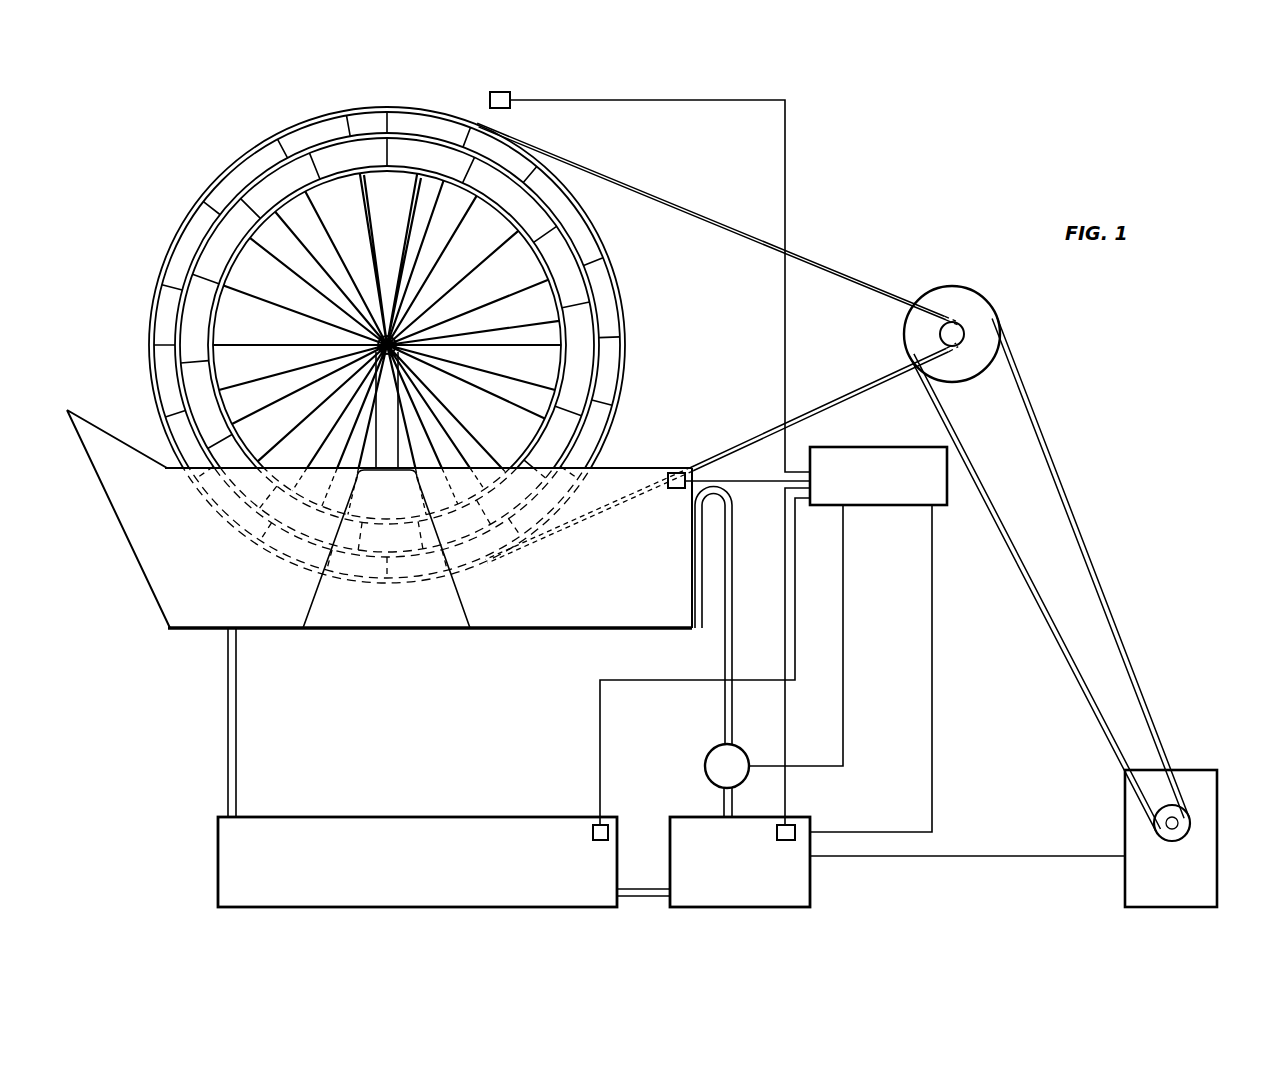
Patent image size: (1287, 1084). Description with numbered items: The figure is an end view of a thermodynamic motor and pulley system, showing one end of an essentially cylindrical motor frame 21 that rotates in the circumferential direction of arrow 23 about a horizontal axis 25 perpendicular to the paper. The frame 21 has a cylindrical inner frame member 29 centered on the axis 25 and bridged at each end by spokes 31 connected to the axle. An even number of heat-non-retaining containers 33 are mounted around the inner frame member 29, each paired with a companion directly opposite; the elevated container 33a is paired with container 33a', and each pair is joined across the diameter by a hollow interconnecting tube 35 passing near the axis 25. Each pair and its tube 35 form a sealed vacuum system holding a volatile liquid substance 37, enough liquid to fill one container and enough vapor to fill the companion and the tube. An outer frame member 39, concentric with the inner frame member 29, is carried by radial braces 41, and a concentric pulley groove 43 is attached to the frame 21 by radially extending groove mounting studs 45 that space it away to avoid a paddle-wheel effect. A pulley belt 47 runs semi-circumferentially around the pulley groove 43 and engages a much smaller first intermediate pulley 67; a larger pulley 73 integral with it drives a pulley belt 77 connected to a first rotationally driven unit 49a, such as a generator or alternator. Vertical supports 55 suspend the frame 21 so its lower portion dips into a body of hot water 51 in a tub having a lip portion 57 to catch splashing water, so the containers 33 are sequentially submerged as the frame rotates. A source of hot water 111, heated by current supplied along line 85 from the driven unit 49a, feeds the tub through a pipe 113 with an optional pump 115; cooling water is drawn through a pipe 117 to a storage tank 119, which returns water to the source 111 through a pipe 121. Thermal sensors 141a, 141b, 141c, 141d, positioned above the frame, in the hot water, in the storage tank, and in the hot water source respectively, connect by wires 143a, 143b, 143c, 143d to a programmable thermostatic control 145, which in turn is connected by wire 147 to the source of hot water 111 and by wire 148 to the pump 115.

The motor frame 21 is at (119, 199).
The arrow 23 is at (106, 322).
The horizontal axis 25 is at (346, 343).
The inner frame member 29 is at (204, 340).
The spokes 31 is at (312, 241).
The containers 33 is at (590, 278).
The elevated container 33a is at (387, 281).
The companion container 33a' is at (387, 539).
The interconnecting tube 35 is at (374, 238).
The volatile liquid substance 37 is at (378, 259).
The outer frame member 39 is at (278, 138).
The radial braces 41 is at (228, 186).
The pulley groove 43 is at (615, 409).
The groove mounting studs 45 is at (250, 154).
The pulley belt 47 is at (152, 300).
The first rotationally driven unit 49a is at (1216, 823).
The body of hot water 51 is at (428, 548).
The vertical supports 55 is at (383, 448).
The lip portion 57 is at (120, 441).
The first intermediate pulley 67 is at (954, 347).
The pulley 73 is at (1000, 365).
The pulley belt 77 is at (1043, 438).
The line 85 is at (1003, 856).
The source of hot water 111 is at (812, 899).
The pipe 113 is at (723, 573).
The pump 115 is at (705, 766).
The pipe 117 is at (236, 742).
The storage tank 119 is at (452, 817).
The pipe 121 is at (651, 891).
The thermal sensor 141a is at (506, 92).
The thermal sensor 141b is at (677, 491).
The thermal sensor 141c is at (596, 843).
The thermal sensor 141d is at (778, 843).
The wire 143a is at (790, 187).
The wire 143b is at (773, 483).
The wire 143c is at (598, 724).
The wire 143d is at (785, 737).
The programmable thermostatic control 145 is at (898, 447).
The wire 147 is at (932, 629).
The wire 148 is at (843, 573).